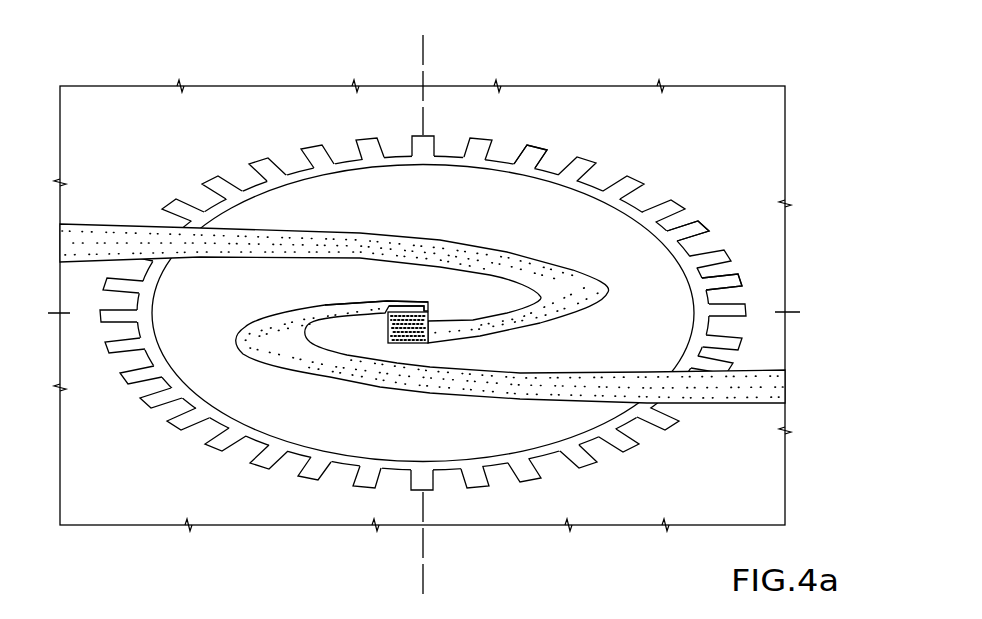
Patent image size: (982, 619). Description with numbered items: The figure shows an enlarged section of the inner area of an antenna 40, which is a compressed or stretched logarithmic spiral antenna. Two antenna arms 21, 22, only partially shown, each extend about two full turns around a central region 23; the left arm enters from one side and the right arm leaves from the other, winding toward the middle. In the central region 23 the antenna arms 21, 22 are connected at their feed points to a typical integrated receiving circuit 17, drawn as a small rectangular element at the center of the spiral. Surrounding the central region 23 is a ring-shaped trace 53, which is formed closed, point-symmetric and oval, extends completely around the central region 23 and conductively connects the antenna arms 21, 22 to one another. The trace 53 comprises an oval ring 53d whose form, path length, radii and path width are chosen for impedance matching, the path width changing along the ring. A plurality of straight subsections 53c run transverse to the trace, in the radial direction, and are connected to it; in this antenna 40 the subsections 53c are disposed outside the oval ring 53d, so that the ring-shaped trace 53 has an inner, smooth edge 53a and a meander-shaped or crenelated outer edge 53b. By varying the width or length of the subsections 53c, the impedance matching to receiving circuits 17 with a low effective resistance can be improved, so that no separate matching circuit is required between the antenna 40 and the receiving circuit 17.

The antenna 40 is at (203, 62).
The antenna arm 21 is at (107, 222).
The antenna arm 22 is at (752, 405).
The central region 23 is at (446, 317).
The integrated receiving circuit 17 is at (380, 335).
The ring-shaped trace 53 is at (433, 301).
The inner, smooth edge 53a is at (490, 168).
The meander-shaped or crenelated, outer edge 53b is at (544, 134).
The straight subsection 53c is at (714, 213).
The ring 53d is at (681, 290).